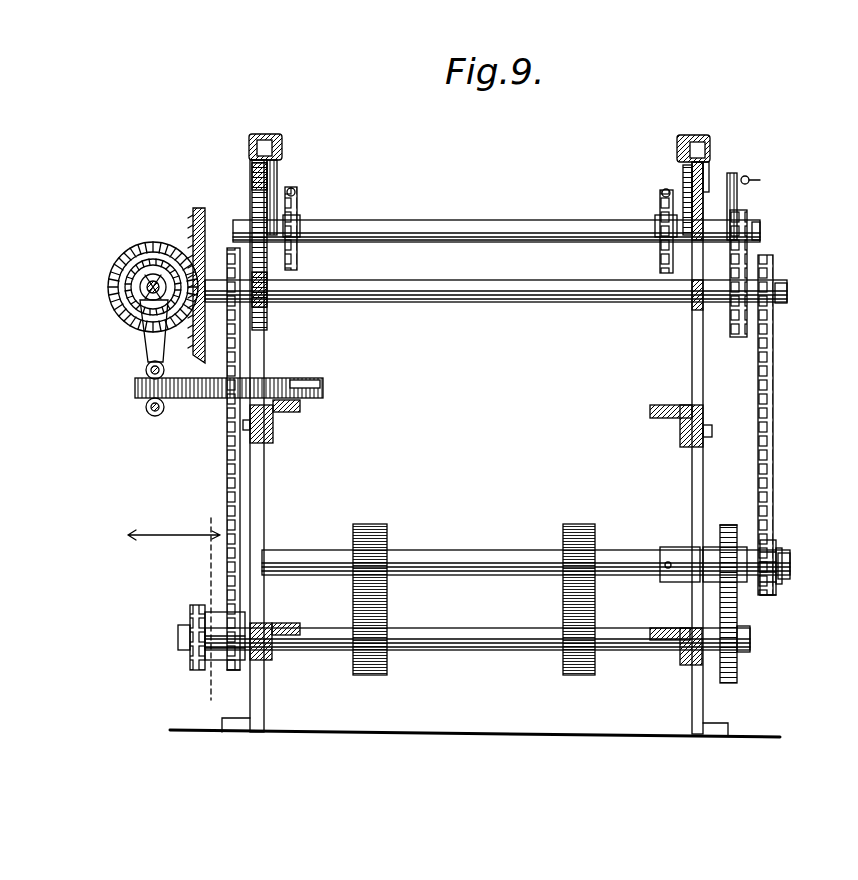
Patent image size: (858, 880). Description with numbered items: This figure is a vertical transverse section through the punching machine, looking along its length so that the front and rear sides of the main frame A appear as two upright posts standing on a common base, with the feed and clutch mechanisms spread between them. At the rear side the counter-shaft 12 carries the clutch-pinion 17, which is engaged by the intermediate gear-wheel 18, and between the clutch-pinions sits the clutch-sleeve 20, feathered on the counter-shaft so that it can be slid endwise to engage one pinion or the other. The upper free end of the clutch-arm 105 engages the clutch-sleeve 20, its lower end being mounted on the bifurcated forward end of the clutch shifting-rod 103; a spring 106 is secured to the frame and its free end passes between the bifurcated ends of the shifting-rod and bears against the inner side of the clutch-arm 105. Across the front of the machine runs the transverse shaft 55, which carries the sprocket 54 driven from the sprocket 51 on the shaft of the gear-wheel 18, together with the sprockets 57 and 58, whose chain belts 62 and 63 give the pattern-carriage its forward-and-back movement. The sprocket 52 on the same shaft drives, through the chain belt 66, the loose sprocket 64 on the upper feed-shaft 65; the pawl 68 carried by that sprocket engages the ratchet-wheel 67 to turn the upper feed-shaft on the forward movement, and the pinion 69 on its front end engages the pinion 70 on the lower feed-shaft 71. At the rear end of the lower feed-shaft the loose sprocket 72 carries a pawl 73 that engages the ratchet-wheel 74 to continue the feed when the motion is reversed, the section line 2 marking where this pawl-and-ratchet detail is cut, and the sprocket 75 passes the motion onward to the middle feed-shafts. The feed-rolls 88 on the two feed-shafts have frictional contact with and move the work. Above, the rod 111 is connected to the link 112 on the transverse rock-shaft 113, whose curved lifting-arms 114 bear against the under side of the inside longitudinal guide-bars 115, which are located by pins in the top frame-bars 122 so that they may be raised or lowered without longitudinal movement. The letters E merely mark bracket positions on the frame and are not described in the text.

The transverse rock-shaft 113 is at (505, 228).
The transverse shaft 55 is at (508, 243).
The upper feed-shaft 65 is at (487, 547).
The lower feed-shaft 71 is at (484, 652).
The feed-rolls 88 is at (382, 618).
The inside longitudinal guide-bars 115 is at (282, 148).
The curved lifting-arms 114 is at (252, 201).
The top frame-bars 122 is at (252, 174).
The chain belt 63 is at (293, 190).
The sprocket 58 is at (300, 218).
The intermediate gear-wheel 18 is at (193, 223).
The clutch-sleeve 20 is at (108, 301).
The clutch-pinion 17 is at (116, 277).
The counter-shaft 12 is at (150, 268).
The clutch-arm 105 is at (143, 342).
The spring 106 is at (196, 399).
The clutch shifting-rod 103 is at (146, 411).
The sprocket 72 is at (228, 669).
The pawl 73 is at (214, 613).
The ratchet-wheel 74 is at (198, 631).
The sprocket 75 is at (182, 647).
The section line 2a 2 is at (174, 604).
The chain belt 62 is at (660, 190).
The sprocket 57 is at (660, 213).
The rod 111 is at (752, 181).
The link 112 is at (738, 206).
The sprocket 54 is at (761, 235).
The sprocket 51 is at (736, 338).
The sprocket 52 is at (786, 303).
The chain belt 66 is at (775, 398).
The pinion 70 is at (728, 684).
The pinion 69 is at (732, 523).
The sprocket 64 is at (770, 541).
The pawl 68 is at (784, 553).
The ratchet-wheel 67 is at (780, 587).
The main frame A is at (256, 492).
The bracket E is at (658, 628).